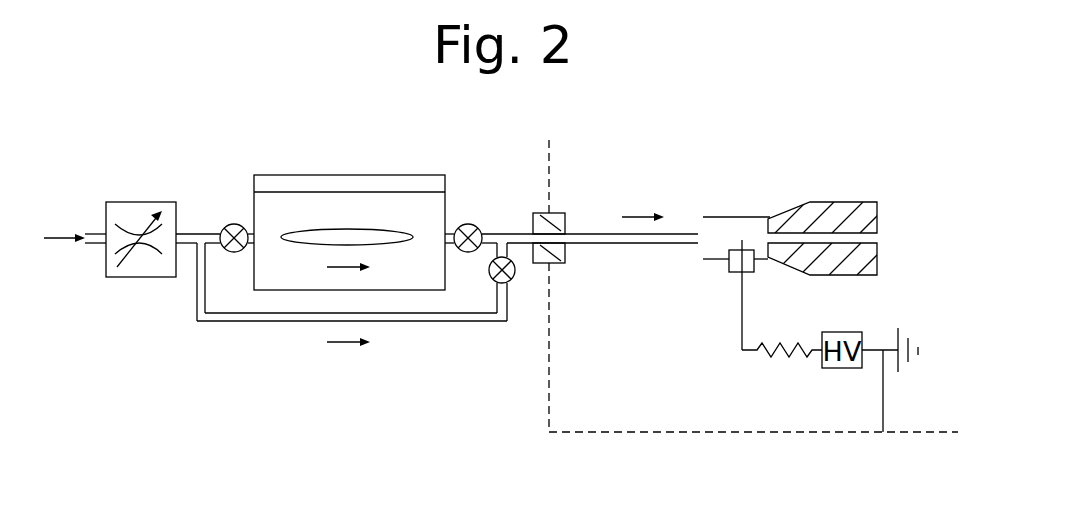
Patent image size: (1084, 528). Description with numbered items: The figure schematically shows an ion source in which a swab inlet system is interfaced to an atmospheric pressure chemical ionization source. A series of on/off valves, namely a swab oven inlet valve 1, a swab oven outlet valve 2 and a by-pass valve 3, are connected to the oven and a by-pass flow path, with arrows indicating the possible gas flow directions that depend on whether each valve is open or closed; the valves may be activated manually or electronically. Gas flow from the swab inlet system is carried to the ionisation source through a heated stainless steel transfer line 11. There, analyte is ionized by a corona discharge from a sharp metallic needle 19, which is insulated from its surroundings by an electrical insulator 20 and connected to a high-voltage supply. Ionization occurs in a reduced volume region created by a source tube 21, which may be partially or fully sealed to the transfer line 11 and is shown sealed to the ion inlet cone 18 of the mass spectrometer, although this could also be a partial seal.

The swab oven inlet valve 1 is at (230, 225).
The swab oven outlet valve 2 is at (466, 225).
The by-pass valve 3 is at (512, 279).
The transfer line 11 is at (650, 245).
The ion inlet cone 18 is at (843, 201).
The metallic needle 19 is at (745, 297).
The electrical insulator 20 is at (728, 274).
The source tube 21 is at (725, 216).